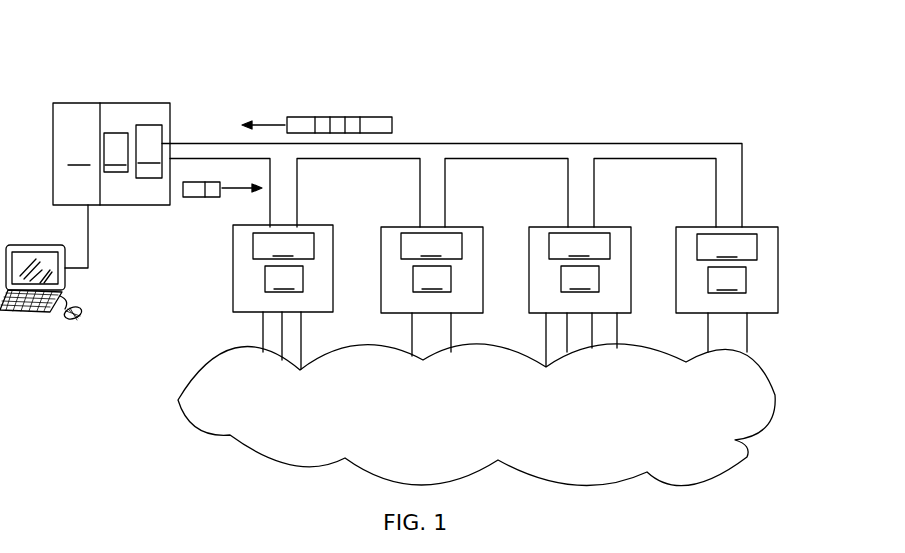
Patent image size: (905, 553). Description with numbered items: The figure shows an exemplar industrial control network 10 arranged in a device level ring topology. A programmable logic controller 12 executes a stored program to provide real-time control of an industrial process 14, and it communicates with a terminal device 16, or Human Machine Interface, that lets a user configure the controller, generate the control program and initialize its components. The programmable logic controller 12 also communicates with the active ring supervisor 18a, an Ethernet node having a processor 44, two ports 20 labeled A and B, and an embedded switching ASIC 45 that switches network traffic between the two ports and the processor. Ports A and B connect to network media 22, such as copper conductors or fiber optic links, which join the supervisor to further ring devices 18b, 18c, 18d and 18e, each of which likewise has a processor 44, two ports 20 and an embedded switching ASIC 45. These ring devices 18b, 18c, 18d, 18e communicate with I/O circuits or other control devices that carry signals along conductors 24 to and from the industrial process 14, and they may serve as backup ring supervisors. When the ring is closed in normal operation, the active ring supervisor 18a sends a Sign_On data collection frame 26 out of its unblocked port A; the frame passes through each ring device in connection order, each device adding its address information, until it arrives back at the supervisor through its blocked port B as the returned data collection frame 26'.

The industrial control network 10 is at (640, 102).
The programmable logic controller 12 is at (79, 156).
The industrial process 14 is at (507, 412).
The terminal device 16 is at (50, 245).
The active ring supervisor 18a is at (128, 103).
The ring device 18b is at (326, 225).
The ring device 18c is at (473, 227).
The ring device 18d is at (621, 227).
The ring device 18e is at (767, 227).
The ports 20 is at (209, 131).
The network media 22 is at (505, 143).
The conductors 24 is at (236, 339).
The data collection frame 26 is at (222, 208).
The data collection frame 26' is at (317, 105).
The processor 44 is at (425, 213).
The embedded switching ASIC 45 is at (446, 192).